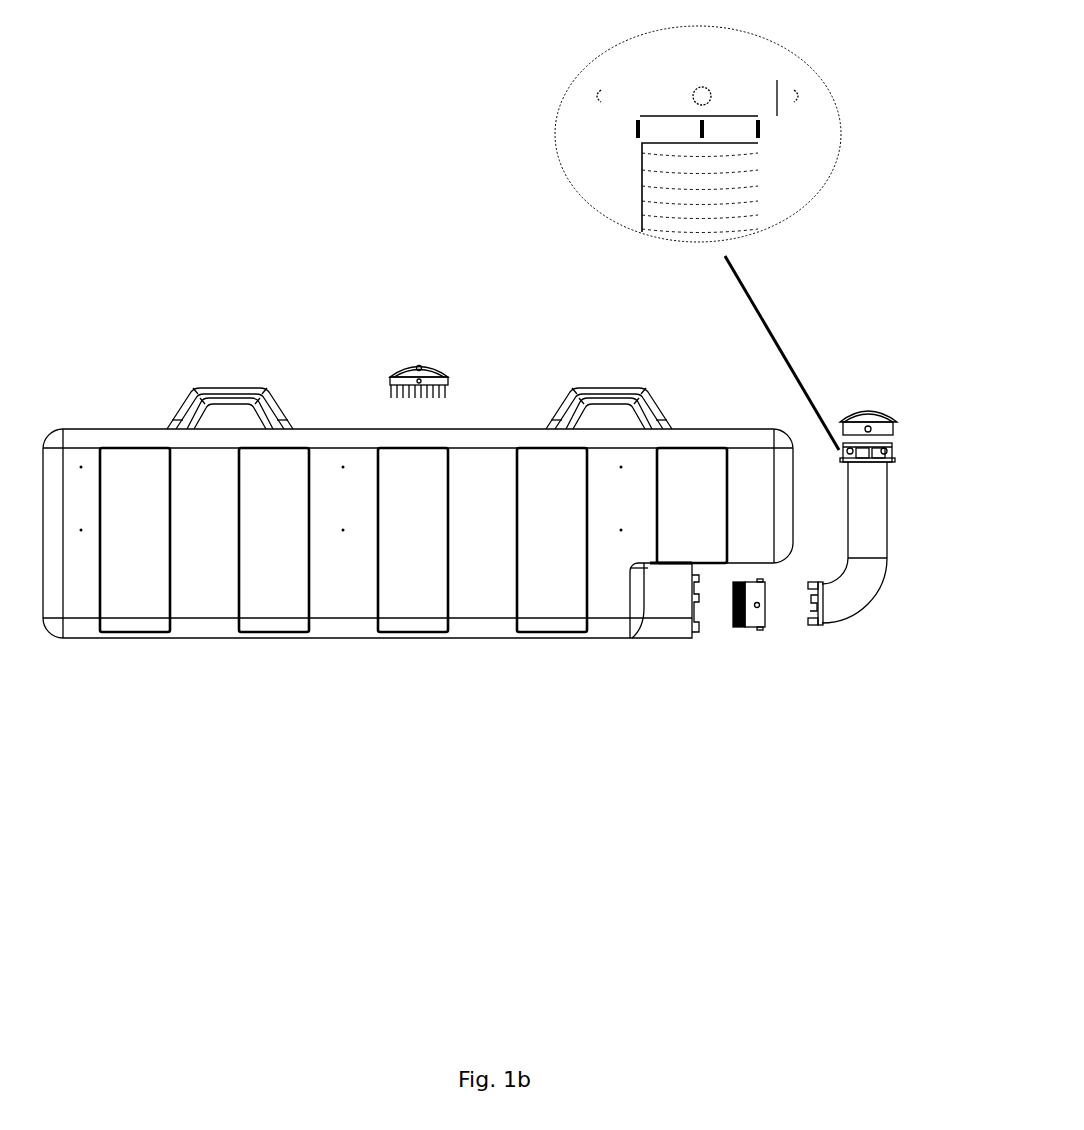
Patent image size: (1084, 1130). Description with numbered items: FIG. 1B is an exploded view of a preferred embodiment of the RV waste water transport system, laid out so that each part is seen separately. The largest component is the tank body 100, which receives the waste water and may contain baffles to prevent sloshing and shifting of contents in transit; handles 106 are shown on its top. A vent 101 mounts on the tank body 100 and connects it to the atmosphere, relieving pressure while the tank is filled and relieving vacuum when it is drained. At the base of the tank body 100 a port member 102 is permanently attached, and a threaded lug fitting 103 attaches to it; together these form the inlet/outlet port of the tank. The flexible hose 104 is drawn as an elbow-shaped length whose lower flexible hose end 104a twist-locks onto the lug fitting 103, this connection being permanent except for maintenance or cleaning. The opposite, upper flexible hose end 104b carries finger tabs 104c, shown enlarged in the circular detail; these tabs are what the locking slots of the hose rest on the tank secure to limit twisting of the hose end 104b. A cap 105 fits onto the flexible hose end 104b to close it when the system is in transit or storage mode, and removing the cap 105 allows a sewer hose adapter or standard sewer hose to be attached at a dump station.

The tank body 100 is at (280, 563).
The vent 101 is at (415, 356).
The port member 102 is at (697, 646).
The threaded lug fitting 103 is at (774, 641).
The flexible hose 104 is at (873, 576).
The flexible hose end 104a is at (831, 629).
The flexible hose end 104b is at (894, 456).
The finger tabs 104c is at (625, 129).
The cap 105 is at (866, 404).
The handles 106 is at (186, 380).